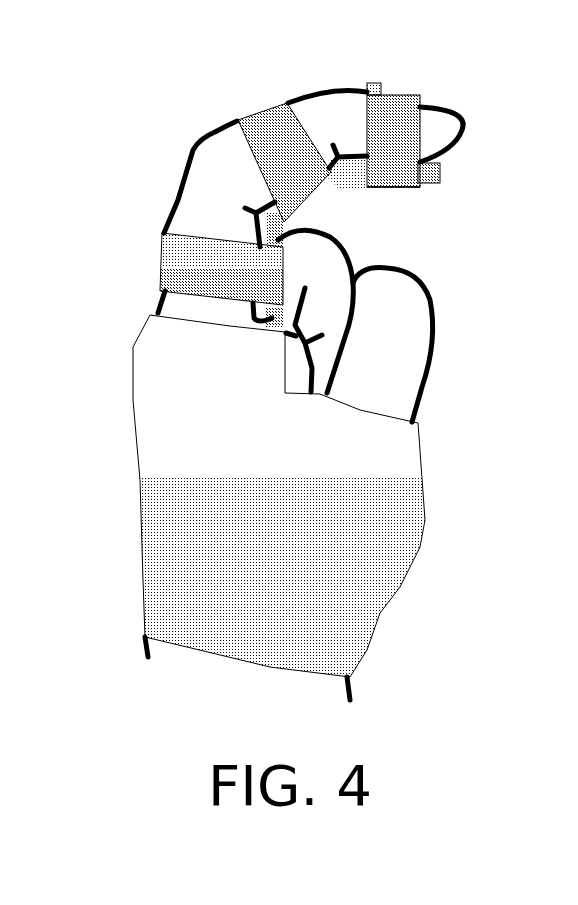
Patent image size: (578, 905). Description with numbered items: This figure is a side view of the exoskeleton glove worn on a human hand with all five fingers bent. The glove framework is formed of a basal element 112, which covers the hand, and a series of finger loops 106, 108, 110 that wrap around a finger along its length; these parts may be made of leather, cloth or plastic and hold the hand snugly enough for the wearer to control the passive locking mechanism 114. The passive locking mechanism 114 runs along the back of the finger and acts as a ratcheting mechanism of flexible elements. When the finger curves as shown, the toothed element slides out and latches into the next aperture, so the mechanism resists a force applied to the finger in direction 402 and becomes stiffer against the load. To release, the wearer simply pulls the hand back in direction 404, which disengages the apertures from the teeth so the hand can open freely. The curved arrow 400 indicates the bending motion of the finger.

The finger loop 106 is at (150, 261).
The finger loop 108 is at (247, 109).
The finger loop 110 is at (407, 89).
The basal element 112 is at (378, 514).
The passive locking mechanism 114 is at (434, 196).
The rotation direction of finger loop 400 is at (473, 140).
The direction 402 is at (386, 198).
The direction 404 is at (391, 43).